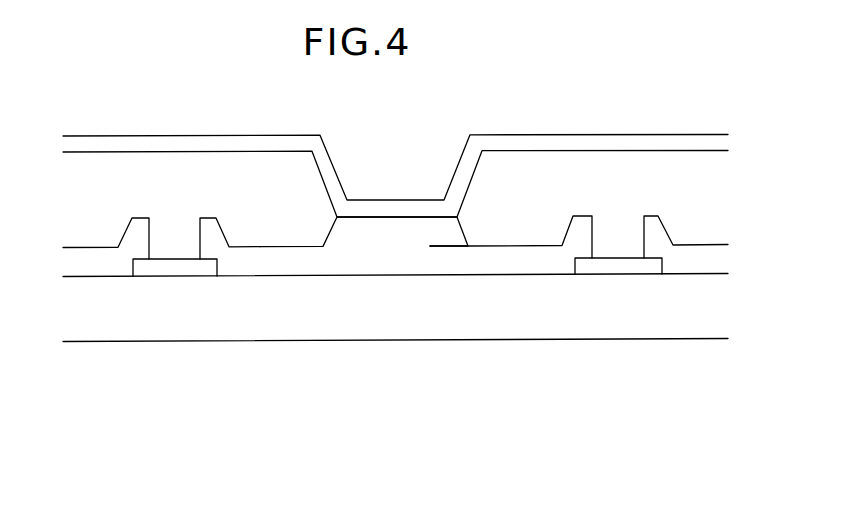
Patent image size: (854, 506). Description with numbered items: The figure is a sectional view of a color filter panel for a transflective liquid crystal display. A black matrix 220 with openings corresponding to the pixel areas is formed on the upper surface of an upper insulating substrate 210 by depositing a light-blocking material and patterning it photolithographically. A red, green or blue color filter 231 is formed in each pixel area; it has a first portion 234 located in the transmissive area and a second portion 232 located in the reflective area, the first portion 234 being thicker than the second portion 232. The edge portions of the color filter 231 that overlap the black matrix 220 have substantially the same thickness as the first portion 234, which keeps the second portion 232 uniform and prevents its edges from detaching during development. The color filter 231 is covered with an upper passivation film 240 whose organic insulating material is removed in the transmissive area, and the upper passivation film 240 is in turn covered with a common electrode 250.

The upper insulating substrate 210 is at (450, 325).
The black matrix 220 is at (155, 268).
The color filter 231 is at (395, 339).
The second portion of the color filter 232 is at (285, 262).
The first portion of the color filter 234 is at (208, 238).
The upper passivation film 240 is at (572, 160).
The common electrode 250 is at (508, 145).